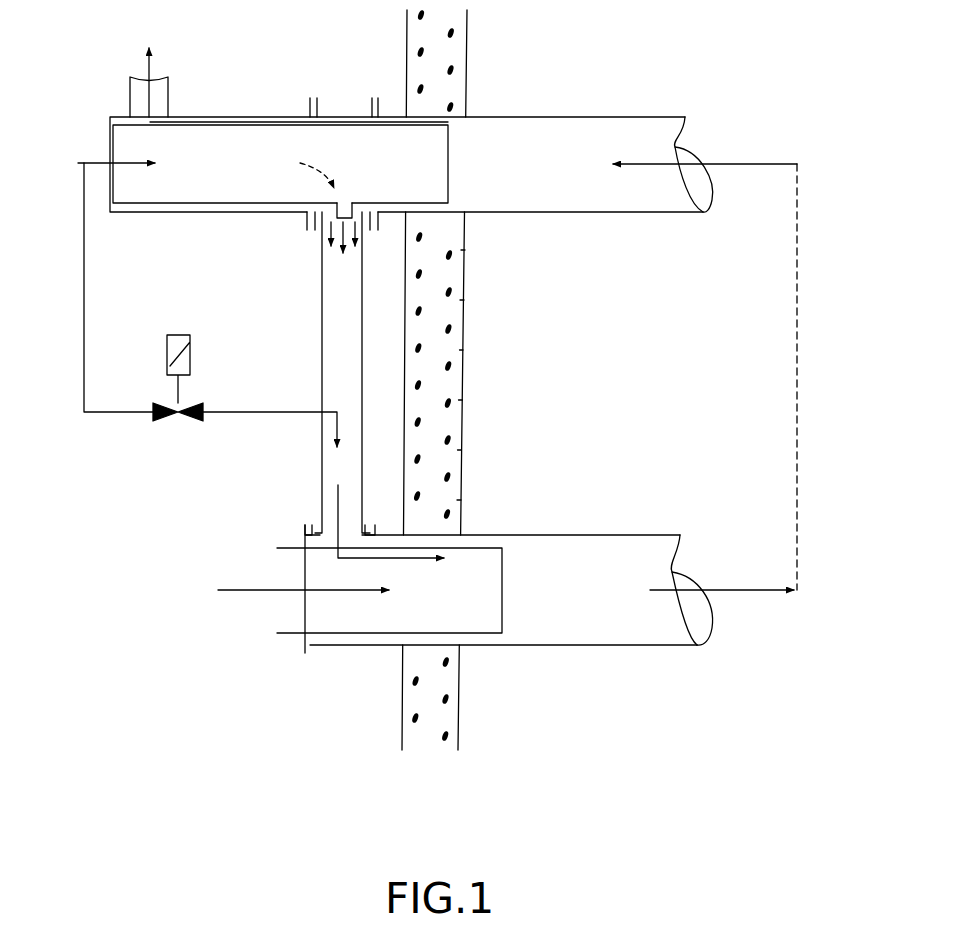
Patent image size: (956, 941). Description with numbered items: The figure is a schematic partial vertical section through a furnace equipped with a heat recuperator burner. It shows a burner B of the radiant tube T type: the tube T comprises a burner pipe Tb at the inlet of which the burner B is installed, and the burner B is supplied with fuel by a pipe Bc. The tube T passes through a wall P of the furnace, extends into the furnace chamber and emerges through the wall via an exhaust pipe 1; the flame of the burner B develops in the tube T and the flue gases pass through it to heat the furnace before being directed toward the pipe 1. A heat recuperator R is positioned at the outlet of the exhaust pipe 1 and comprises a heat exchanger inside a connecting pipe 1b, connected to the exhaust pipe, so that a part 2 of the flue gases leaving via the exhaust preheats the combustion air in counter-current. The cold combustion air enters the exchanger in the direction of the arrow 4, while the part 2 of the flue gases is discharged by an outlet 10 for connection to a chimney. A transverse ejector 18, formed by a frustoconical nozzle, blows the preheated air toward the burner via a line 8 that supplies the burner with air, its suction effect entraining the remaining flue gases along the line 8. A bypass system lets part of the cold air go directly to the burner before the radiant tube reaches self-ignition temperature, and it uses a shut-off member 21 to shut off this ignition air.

The exhaust pipe 1 is at (578, 117).
The connecting pipe 1b is at (285, 117).
The part of the flue gases 2 is at (343, 117).
The arrow 4 is at (95, 162).
The line 8 is at (320, 358).
The outlet 10 is at (170, 95).
The transverse ejector 18 is at (362, 188).
The shut-off member 21 is at (173, 338).
The burner B is at (363, 618).
The pipe Bc is at (247, 590).
The wall P is at (455, 373).
The heat recuperator R is at (237, 140).
The radiant tube T is at (595, 236).
The burner pipe Tb is at (568, 628).